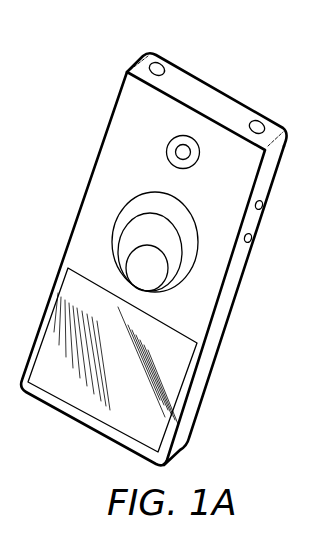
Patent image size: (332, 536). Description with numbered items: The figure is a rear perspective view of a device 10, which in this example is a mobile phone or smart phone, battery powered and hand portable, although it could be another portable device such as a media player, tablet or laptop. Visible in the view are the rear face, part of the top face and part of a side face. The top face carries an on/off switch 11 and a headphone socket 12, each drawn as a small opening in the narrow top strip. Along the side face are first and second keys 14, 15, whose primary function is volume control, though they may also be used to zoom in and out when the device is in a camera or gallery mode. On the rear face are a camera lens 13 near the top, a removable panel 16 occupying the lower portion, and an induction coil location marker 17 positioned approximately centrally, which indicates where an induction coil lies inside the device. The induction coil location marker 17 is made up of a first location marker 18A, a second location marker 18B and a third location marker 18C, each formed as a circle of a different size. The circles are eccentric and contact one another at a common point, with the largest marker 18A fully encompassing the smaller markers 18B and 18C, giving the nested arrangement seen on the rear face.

The device 10 is at (97, 58).
The on/off switch 11 is at (161, 63).
The headphone socket 12 is at (258, 121).
The camera lens 13 is at (183, 135).
The first key 14 is at (262, 206).
The second key 15 is at (251, 239).
The removable panel 16 is at (175, 367).
The induction coil location marker 17 is at (198, 274).
The first location marker 18A is at (133, 194).
The second location marker 18B is at (122, 211).
The third location marker 18C is at (118, 238).